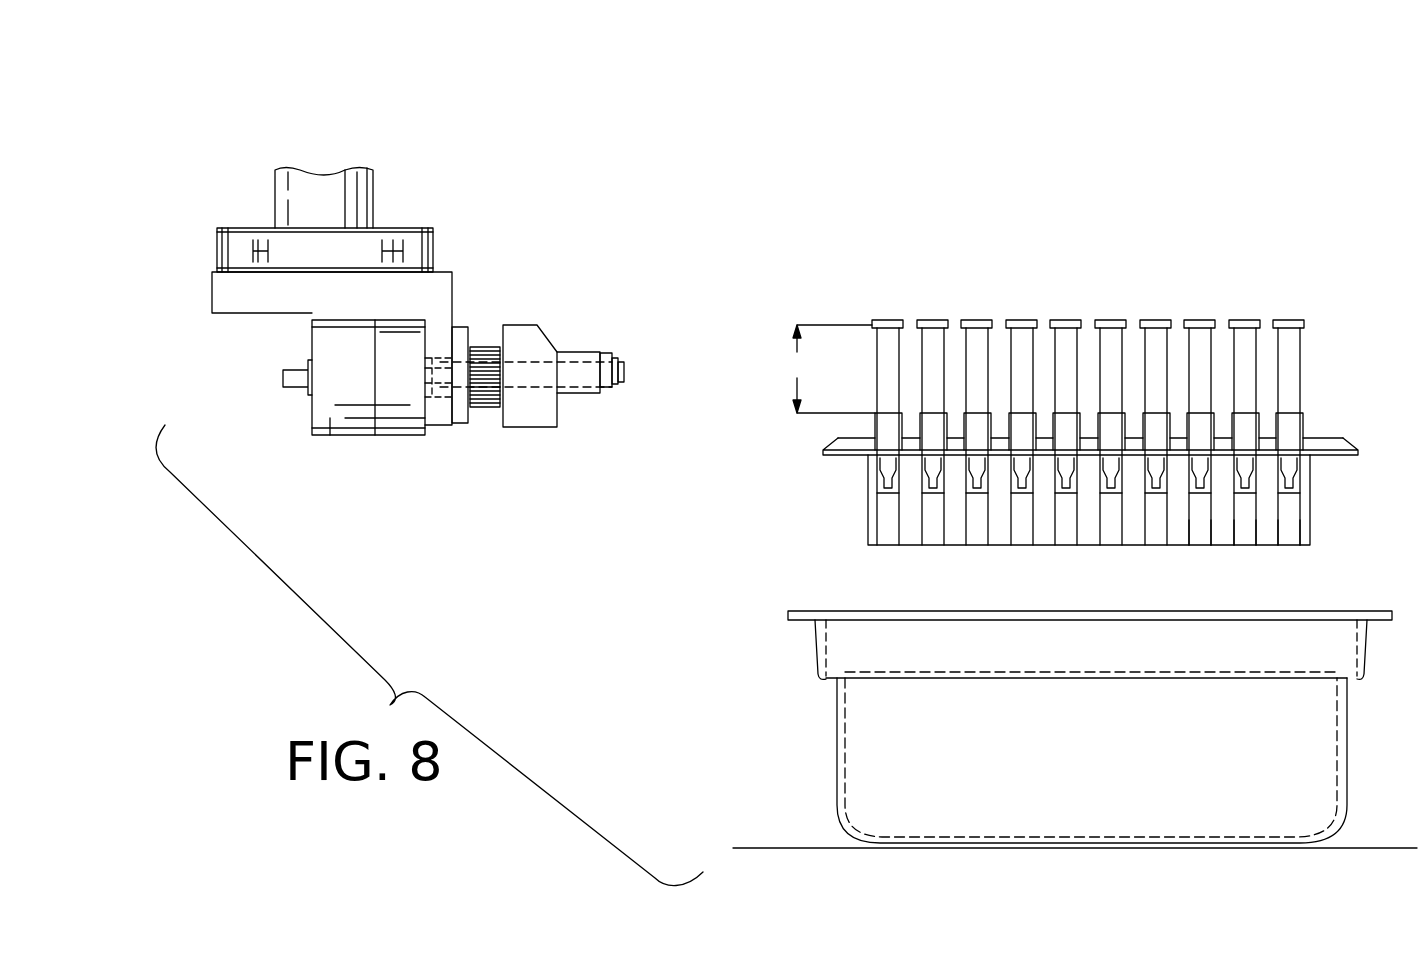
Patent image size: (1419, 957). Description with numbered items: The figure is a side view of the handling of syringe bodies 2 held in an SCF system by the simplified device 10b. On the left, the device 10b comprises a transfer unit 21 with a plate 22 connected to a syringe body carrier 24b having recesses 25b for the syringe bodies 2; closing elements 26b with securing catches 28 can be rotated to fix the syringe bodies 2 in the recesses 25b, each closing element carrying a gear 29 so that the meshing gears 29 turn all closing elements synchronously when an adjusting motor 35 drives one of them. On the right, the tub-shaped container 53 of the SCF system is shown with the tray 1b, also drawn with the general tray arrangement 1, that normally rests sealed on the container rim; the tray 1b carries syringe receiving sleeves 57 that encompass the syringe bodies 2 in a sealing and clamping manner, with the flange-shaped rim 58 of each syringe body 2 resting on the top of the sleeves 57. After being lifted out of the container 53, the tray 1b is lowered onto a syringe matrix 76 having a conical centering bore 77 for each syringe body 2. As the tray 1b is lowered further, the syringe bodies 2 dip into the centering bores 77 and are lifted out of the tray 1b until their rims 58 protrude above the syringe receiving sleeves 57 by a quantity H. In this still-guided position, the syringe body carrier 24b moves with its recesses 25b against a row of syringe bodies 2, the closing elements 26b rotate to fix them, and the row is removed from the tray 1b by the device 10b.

The device 10b is at (395, 200).
The adjusting motor 35 is at (340, 412).
The plate 22 is at (455, 330).
The gear 29 is at (485, 350).
The transfer unit 21 is at (525, 395).
The closing elements 26b is at (575, 350).
The syringe body carrier 24b is at (556, 398).
The recesses 25b is at (620, 380).
The securing catches 28 is at (620, 366).
The rack assembly 1 is at (860, 302).
The syringe bodies 2 is at (1290, 345).
The rim 58 is at (975, 321).
The syringe receiving sleeves 57 is at (885, 422).
The tray 1b is at (833, 460).
The syringe matrix 76 is at (1307, 500).
The centering bore 77 is at (1288, 532).
The container 53 is at (837, 775).